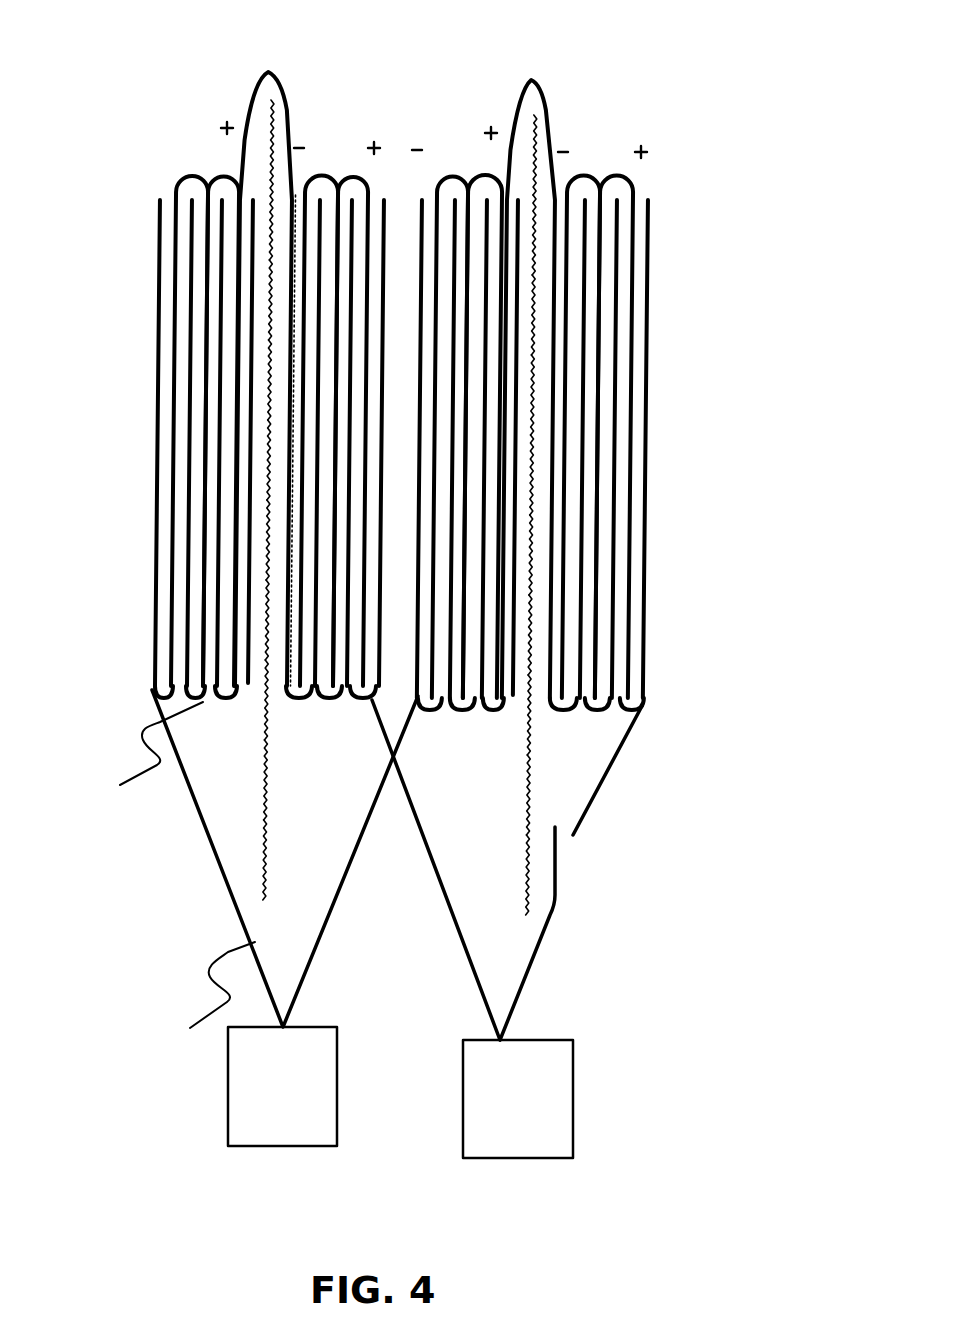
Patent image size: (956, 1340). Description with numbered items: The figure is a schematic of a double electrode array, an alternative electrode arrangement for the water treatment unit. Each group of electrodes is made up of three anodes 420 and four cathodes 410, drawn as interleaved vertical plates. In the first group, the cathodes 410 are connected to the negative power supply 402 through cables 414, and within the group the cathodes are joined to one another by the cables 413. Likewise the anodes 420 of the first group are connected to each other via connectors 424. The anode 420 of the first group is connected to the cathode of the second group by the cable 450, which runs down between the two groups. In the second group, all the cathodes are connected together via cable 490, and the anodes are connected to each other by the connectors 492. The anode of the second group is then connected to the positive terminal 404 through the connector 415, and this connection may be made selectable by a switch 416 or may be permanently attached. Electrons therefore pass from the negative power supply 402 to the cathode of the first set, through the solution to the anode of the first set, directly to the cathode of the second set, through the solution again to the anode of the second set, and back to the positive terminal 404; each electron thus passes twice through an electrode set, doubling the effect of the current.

The negative power supply 402 is at (282, 1086).
The positive terminal 404 is at (518, 1099).
The cathodes 410 is at (247, 427).
The cables 413 is at (162, 879).
The cables 414 is at (285, 858).
The connector 415 is at (436, 870).
The switch 416 is at (571, 873).
The anodes 420 is at (230, 563).
The connectors 424 is at (187, 150).
The cable 450 is at (292, 95).
The cable 490 is at (552, 99).
The connectors 492 is at (328, 411).